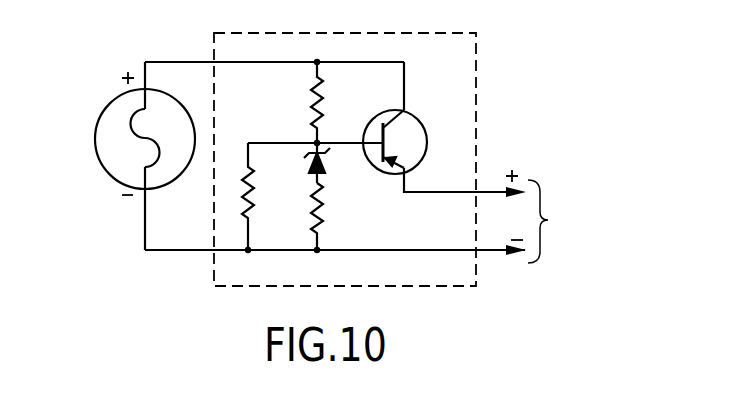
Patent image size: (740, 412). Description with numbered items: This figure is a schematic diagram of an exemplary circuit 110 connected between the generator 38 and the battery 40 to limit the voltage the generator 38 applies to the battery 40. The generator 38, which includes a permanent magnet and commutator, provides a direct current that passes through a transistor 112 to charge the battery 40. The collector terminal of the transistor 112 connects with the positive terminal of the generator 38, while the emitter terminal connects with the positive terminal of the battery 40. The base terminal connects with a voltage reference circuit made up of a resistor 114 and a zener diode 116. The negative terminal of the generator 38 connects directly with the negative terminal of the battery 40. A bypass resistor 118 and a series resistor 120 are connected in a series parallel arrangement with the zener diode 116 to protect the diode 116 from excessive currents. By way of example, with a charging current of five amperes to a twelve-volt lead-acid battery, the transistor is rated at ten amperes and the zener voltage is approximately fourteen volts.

The generator 38 is at (98, 121).
The battery 40 is at (588, 221).
The circuit 110 is at (396, 33).
The transistor 112 is at (410, 122).
The resistor 114 is at (324, 100).
The zener diode 116 is at (327, 158).
The bypass resistor 118 is at (254, 206).
The series resistor 120 is at (325, 220).